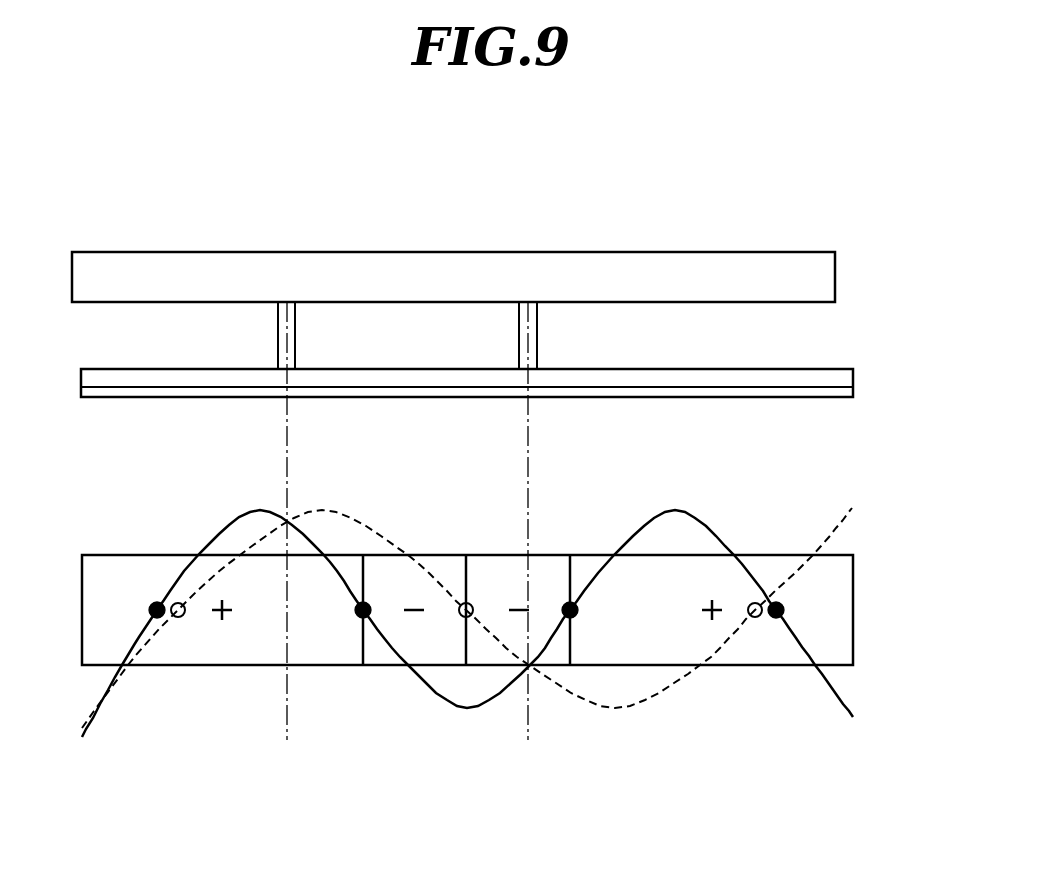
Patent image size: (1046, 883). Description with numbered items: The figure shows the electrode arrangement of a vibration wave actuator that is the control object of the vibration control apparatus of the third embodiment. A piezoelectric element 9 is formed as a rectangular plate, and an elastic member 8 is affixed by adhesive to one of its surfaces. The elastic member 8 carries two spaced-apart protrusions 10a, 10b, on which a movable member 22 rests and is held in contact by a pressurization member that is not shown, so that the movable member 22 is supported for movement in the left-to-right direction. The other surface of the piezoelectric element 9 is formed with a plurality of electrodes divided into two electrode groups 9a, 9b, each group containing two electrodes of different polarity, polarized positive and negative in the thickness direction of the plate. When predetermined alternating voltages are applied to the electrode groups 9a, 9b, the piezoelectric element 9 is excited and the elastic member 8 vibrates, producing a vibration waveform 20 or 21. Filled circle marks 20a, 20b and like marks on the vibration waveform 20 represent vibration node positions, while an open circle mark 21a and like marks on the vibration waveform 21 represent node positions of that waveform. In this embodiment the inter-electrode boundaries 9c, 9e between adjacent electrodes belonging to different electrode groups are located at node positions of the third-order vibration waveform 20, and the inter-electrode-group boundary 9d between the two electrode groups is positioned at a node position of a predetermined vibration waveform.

The elastic member 8 is at (833, 367).
The piezoelectric element 9 is at (833, 397).
The electrode group 9a is at (230, 643).
The electrode group 9b is at (385, 653).
The inter-electrode boundary 9c is at (363, 587).
The inter-electrode-group boundary 9d is at (466, 585).
The inter-electrode boundary 9e is at (570, 585).
The protrusion 10a is at (296, 313).
The protrusion 10b is at (538, 313).
The vibration waveform 20 is at (835, 690).
The filled circle mark 20a is at (352, 620).
The filled circle mark 20b is at (577, 620).
The vibration waveform 21 is at (822, 540).
The open circle mark 21a is at (461, 618).
The movable member 22 is at (803, 265).